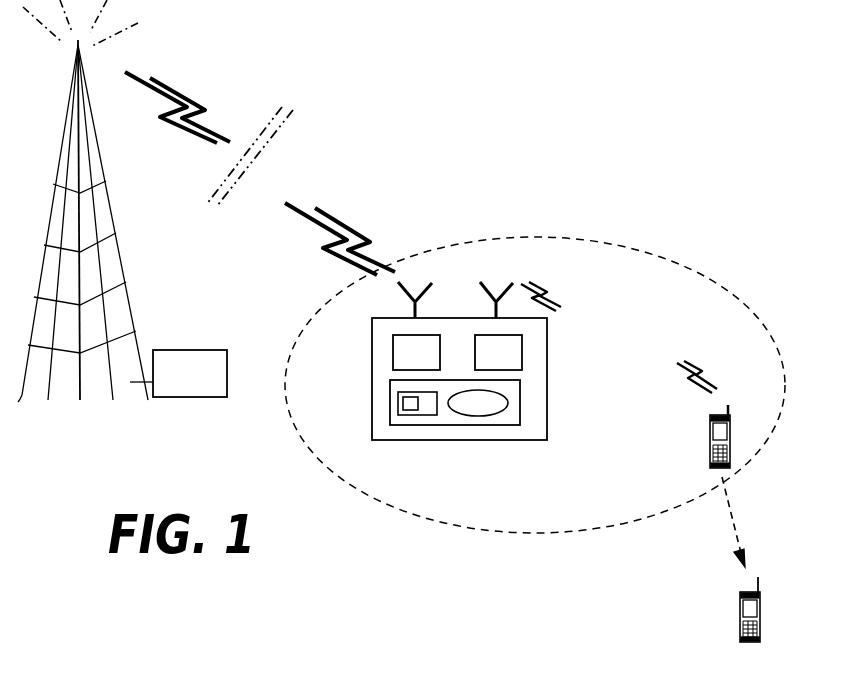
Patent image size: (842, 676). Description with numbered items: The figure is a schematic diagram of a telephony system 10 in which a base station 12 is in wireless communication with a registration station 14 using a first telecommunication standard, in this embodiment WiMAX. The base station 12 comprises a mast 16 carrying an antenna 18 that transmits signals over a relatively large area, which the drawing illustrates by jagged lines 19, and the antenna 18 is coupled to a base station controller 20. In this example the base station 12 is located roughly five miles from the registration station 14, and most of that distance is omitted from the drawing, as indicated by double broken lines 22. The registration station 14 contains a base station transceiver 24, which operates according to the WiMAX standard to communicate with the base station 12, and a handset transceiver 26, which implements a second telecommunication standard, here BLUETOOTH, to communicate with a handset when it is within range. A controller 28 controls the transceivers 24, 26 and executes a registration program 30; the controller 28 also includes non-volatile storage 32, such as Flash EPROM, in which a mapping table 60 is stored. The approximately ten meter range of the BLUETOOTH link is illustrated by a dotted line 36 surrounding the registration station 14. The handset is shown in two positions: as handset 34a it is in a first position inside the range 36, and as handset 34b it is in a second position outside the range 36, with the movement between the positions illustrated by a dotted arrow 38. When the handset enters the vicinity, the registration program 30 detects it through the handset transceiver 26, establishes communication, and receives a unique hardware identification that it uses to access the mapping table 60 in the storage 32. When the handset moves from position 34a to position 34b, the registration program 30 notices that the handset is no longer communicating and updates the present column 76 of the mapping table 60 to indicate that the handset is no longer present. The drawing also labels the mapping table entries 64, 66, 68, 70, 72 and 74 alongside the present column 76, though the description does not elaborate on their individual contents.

The telephony system 10 is at (570, 138).
The base station 12 is at (82, 440).
The registration station 14 is at (547, 390).
The mast 16 is at (97, 122).
The antenna 18 is at (77, 48).
The jagged lines 19 is at (173, 88).
The base station controller 20 is at (178, 373).
The double broken lines 22 is at (294, 117).
The base station transceiver 24 is at (416, 352).
The handset transceiver 26 is at (498, 352).
The controller 28 is at (388, 397).
The registration program 30 is at (507, 410).
The non-volatile storage 32 is at (437, 412).
The handset in first position 34a is at (730, 460).
The handset in second position 34b is at (760, 633).
The dotted line 36 is at (780, 410).
The dotted arrow 38 is at (740, 525).
The mapping table 60 is at (410, 410).
The data field 64 is at (87, 667).
The data field 66 is at (200, 667).
The data field 68 is at (265, 667).
The data field 70 is at (365, 667).
The data field 72 is at (484, 675).
The data field 74 is at (559, 675).
The present column 76 is at (670, 675).